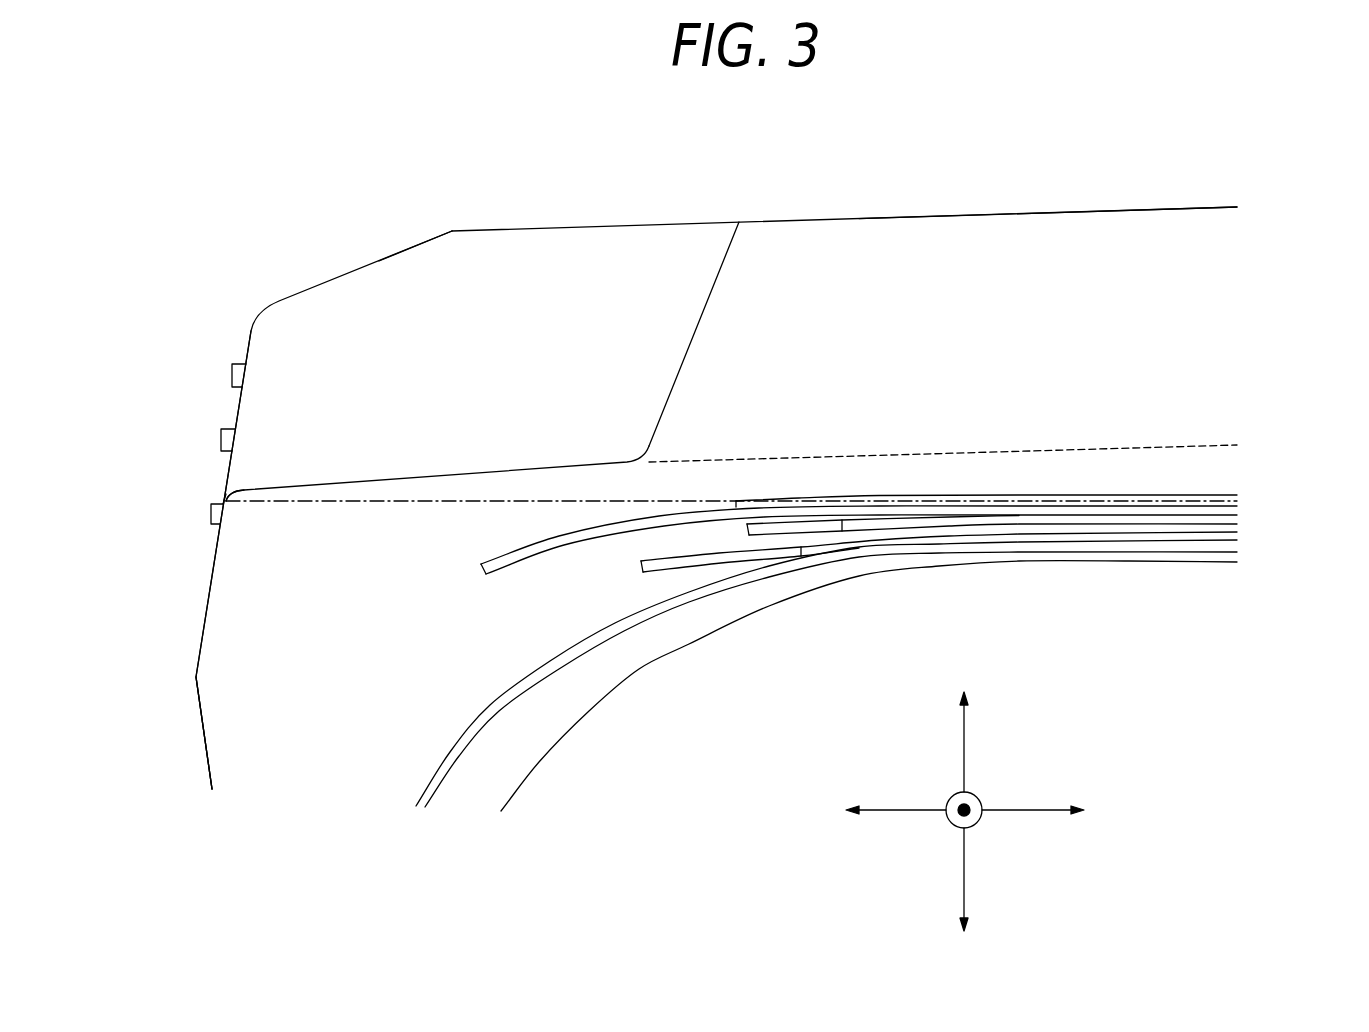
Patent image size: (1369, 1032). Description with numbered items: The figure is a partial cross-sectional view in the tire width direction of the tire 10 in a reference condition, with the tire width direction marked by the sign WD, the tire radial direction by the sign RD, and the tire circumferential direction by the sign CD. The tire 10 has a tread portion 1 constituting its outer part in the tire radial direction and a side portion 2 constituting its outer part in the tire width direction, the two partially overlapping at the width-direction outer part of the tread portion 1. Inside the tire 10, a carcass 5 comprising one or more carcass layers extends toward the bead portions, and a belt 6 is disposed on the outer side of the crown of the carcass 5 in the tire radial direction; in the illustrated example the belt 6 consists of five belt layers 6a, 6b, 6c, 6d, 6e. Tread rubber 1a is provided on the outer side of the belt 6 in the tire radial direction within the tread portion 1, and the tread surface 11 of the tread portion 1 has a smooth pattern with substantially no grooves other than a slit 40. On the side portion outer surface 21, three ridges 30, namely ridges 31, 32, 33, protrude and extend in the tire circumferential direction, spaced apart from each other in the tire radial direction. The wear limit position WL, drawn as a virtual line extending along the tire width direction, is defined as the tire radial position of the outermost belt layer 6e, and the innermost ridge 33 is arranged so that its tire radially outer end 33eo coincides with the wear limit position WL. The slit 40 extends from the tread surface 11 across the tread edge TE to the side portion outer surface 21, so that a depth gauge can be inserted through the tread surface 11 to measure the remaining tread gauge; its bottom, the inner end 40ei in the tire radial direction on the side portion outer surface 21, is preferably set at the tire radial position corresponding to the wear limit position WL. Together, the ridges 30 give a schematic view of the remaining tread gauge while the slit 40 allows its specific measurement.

The tread portion 1 is at (872, 252).
The tread rubber 1a is at (1072, 270).
The side portion 2 is at (242, 626).
The carcass 5 is at (1127, 548).
The belt 6 is at (921, 519).
The belt layer 6a is at (978, 562).
The belt layer 6b is at (1240, 530).
The belt layer 6c is at (1240, 522).
The belt layer 6d is at (1240, 512).
The outermost belt layer 6e is at (1240, 500).
The tire 10 is at (760, 190).
The tread surface 11 is at (932, 218).
The side portion outer surface 21 is at (215, 565).
The ridges 30 is at (178, 452).
The ridge 31 is at (233, 376).
The ridge 32 is at (222, 441).
The innermost ridge 33 is at (212, 515).
The tire radially outer end of the ridge 33eo is at (227, 502).
The slit 40 is at (552, 293).
The bottom of the slit 40ei is at (227, 497).
The tread edge TE is at (452, 230).
The wear limit position WL is at (386, 504).
The tire radial direction RD is at (970, 799).
The tire circumferential direction CD is at (980, 802).
The tire width direction WD is at (988, 811).